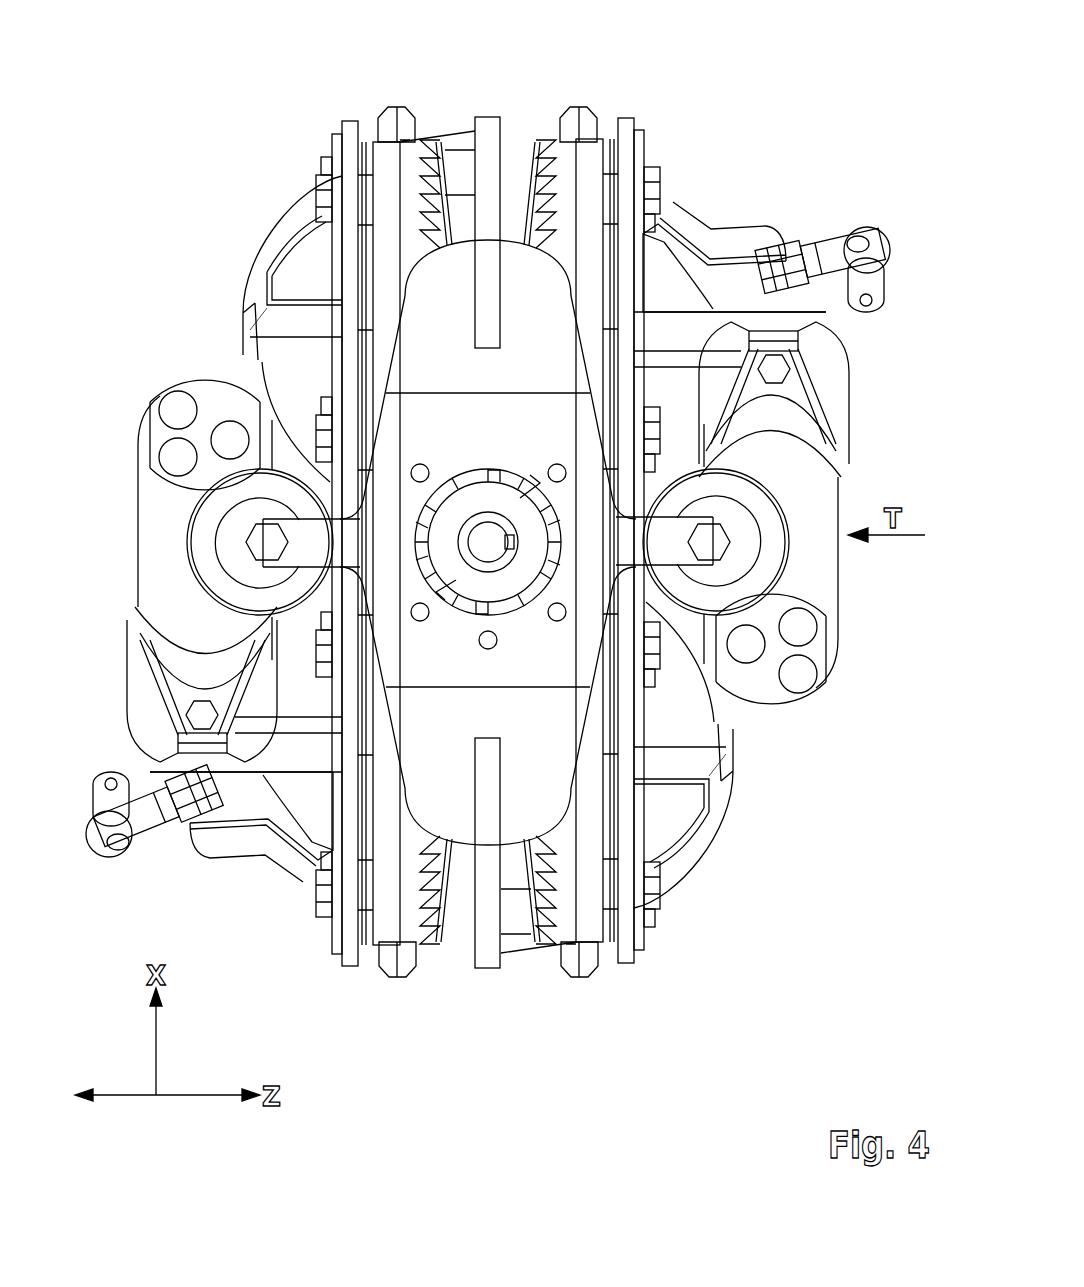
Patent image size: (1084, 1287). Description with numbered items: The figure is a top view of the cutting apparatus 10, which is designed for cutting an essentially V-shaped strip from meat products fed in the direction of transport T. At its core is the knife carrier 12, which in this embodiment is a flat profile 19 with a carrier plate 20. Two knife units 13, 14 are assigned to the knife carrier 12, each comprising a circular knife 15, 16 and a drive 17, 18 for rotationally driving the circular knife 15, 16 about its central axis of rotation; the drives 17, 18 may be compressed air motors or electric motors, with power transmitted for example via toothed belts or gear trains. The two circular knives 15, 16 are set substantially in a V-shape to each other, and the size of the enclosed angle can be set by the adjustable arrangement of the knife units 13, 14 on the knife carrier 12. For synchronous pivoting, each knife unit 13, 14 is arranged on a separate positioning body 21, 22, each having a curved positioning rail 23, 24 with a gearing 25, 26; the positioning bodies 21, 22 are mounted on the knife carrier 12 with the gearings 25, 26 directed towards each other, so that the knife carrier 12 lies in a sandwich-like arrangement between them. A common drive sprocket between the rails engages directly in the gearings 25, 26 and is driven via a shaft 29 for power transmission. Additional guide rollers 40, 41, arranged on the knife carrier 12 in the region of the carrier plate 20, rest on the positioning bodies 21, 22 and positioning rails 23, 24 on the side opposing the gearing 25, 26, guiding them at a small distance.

The cutting apparatus 10 is at (752, 78).
The knife carrier 12 is at (514, 108).
The knife unit 13 is at (240, 886).
The knife unit 14 is at (804, 212).
The circular knife 15 is at (700, 718).
The circular knife 16 is at (280, 354).
The drive 17 is at (145, 572).
The drive 18 is at (820, 482).
The flat profile 19 is at (487, 130).
The carrier plate 20 is at (540, 298).
The positioning body 21 is at (332, 258).
The positioning body 22 is at (650, 244).
The curved positioning rail 23 is at (386, 142).
The curved positioning rail 24 is at (590, 142).
The gearing 25 is at (436, 142).
The gearing 26 is at (540, 150).
The shaft 29 is at (445, 525).
The guide roller 40 is at (200, 541).
The guide roller 41 is at (775, 558).